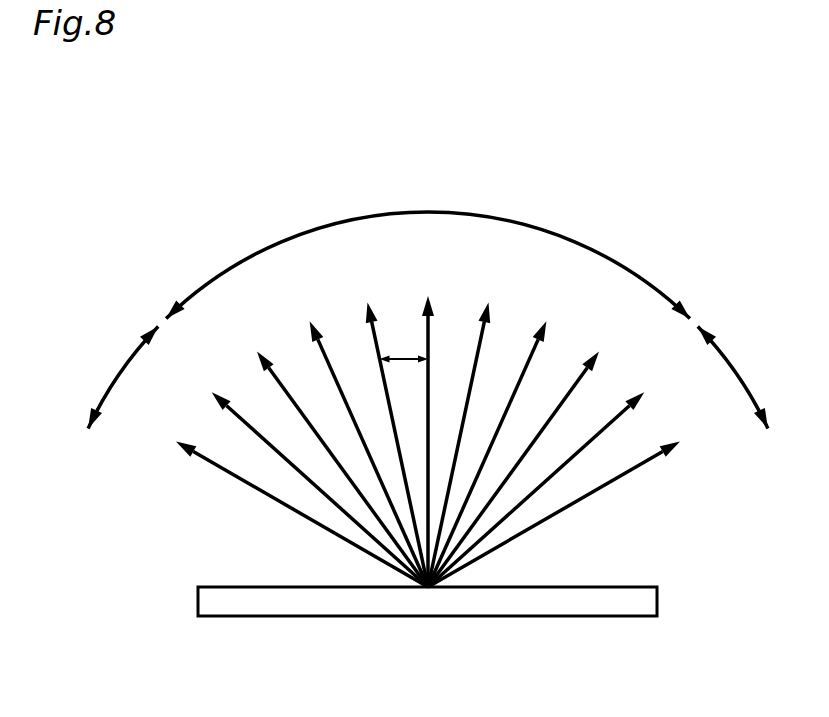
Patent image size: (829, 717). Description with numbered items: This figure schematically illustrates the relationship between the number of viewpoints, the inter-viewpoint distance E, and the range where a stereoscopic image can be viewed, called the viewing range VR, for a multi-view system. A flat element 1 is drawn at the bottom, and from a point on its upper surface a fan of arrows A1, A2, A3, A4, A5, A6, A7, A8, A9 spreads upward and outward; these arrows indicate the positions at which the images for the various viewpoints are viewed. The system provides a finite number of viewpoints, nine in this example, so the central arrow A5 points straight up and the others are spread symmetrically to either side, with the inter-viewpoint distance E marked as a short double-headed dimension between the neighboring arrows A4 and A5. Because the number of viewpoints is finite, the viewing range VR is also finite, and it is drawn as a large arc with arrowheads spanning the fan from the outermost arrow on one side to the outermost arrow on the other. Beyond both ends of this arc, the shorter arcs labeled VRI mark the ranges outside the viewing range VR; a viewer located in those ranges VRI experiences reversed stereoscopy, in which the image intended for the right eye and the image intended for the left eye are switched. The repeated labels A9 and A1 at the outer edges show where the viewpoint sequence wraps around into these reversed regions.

The display device 1 is at (657, 601).
The arrow A1 is at (447, 476).
The arrow A2 is at (336, 452).
The arrow A3 is at (360, 441).
The arrow A4 is at (392, 430).
The arrow A5 is at (428, 427).
The arrow A6 is at (464, 430).
The arrow A7 is at (492, 438).
The arrow A8 is at (521, 453).
The arrow A9 is at (401, 475).
The viewing range VR is at (428, 256).
The ranges outside the viewing range VRI is at (421, 378).
The inter-viewpoint distance E is at (404, 343).